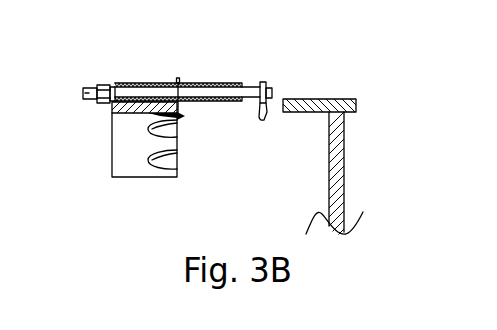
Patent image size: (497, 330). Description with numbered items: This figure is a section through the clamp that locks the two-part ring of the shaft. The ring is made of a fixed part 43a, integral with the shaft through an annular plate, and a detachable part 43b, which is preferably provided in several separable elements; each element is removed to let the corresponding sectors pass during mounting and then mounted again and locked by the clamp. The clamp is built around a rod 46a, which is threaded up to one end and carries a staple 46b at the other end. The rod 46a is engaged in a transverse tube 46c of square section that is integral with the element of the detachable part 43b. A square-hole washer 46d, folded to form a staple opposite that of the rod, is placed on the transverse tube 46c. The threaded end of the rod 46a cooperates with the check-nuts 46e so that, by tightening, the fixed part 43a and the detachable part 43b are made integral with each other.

The fixed part of the ring 43a is at (344, 165).
The detachable part of the ring 43b is at (125, 115).
The rod 46a is at (193, 93).
The staple 46b is at (262, 120).
The transverse tube 46c is at (128, 82).
The square-hole washer 46d is at (179, 116).
The check-nuts 46e is at (105, 99).